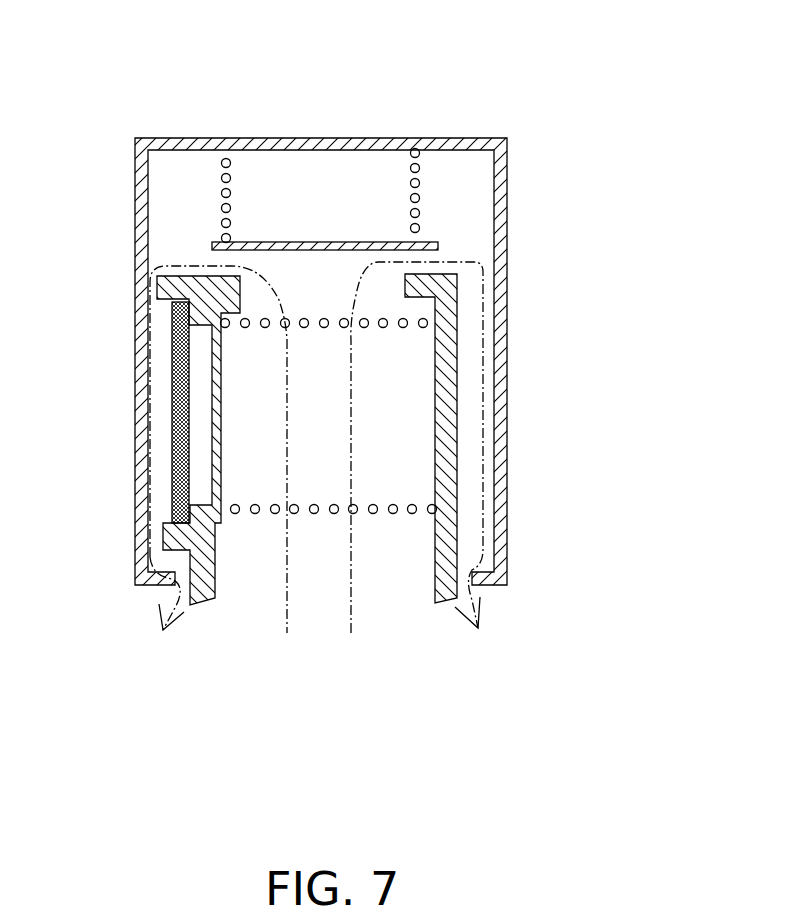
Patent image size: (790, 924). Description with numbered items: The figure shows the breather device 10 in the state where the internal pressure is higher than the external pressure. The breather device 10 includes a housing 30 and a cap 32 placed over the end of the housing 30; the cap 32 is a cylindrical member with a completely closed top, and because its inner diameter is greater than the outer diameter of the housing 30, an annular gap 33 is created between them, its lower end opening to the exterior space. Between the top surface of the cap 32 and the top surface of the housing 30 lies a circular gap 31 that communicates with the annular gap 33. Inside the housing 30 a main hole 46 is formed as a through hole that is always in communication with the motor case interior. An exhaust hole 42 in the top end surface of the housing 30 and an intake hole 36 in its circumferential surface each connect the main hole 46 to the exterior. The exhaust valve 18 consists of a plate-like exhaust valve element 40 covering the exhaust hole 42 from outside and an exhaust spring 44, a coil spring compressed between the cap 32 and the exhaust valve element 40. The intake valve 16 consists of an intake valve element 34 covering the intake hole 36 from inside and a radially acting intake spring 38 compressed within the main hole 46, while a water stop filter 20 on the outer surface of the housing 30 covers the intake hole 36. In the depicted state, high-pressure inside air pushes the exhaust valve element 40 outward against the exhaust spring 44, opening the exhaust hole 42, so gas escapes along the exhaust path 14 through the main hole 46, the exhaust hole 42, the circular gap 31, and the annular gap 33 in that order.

The breather device 10 is at (215, 128).
The exhaust path 14 is at (289, 471).
The intake valve 16 is at (352, 693).
The exhaust valve 18 is at (471, 62).
The water stop filter 20 is at (176, 400).
The housing 30 is at (458, 492).
The circular gap 31 is at (346, 224).
The cap 32 is at (509, 242).
The annular gap 33 is at (472, 387).
The intake valve element 34 is at (221, 474).
The intake hole 36 is at (173, 353).
The intake spring 38 is at (313, 513).
The exhaust valve element 40 is at (355, 242).
The exhaust hole 42 is at (242, 287).
The exhaust spring 44 is at (418, 192).
The main hole 46 is at (341, 437).